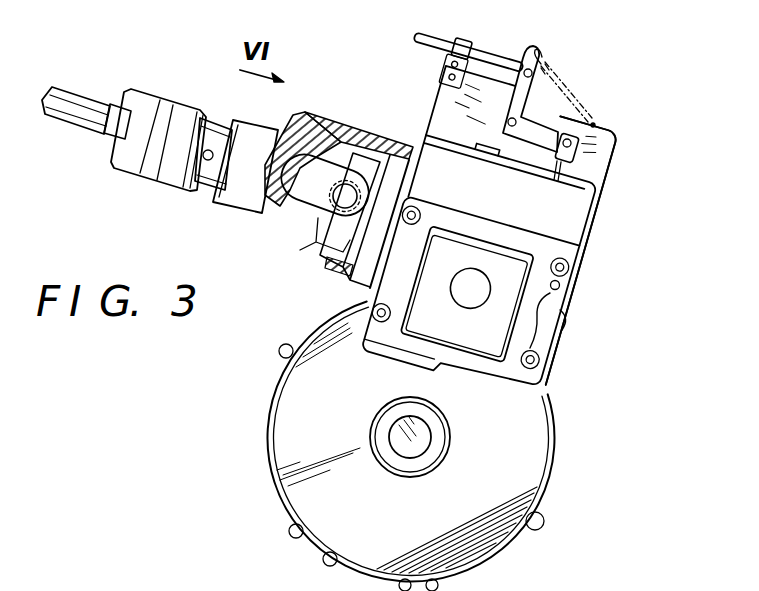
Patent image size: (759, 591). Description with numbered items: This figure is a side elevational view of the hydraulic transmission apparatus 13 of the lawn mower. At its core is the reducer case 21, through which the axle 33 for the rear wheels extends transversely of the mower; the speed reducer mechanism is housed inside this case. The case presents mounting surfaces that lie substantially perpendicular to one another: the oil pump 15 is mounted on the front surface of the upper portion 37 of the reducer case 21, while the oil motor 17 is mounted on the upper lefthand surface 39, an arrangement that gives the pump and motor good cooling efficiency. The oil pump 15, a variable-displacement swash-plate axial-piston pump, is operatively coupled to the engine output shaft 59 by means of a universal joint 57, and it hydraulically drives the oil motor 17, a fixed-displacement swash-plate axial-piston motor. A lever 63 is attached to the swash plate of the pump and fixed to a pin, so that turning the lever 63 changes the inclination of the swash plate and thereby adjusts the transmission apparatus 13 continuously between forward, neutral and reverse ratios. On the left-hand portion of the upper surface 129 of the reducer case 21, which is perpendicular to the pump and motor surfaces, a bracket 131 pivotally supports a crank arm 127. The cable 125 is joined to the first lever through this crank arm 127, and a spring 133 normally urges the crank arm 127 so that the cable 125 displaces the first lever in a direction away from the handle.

The hydraulic transmission apparatus 13 is at (613, 200).
The oil pump 15 is at (358, 130).
The oil motor 17 is at (435, 323).
The reducer case 21 is at (557, 430).
The axle 33 is at (432, 443).
The upper portion 37 is at (387, 143).
The upper lefthand surface 39 is at (572, 227).
The universal joint 57 is at (168, 103).
The engine output shaft 59 is at (80, 96).
The lever 63 is at (310, 188).
The cable 125 is at (498, 53).
The crank arm 127 is at (537, 53).
The upper surface 129 is at (582, 185).
The bracket 131 is at (450, 108).
The spring 133 is at (577, 92).